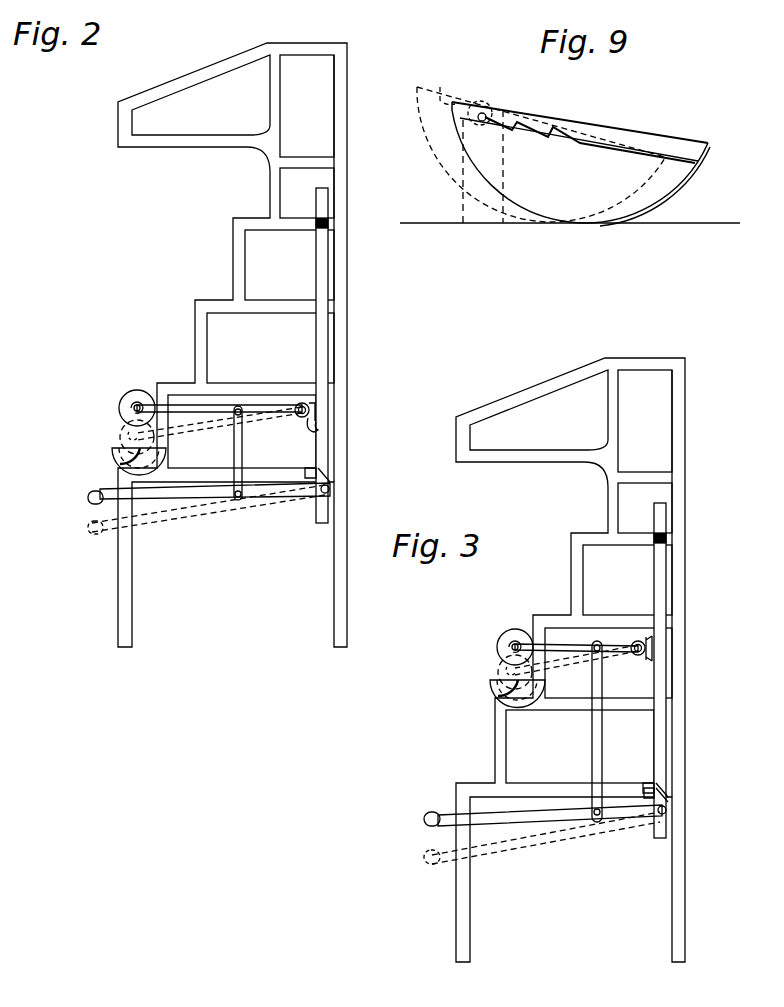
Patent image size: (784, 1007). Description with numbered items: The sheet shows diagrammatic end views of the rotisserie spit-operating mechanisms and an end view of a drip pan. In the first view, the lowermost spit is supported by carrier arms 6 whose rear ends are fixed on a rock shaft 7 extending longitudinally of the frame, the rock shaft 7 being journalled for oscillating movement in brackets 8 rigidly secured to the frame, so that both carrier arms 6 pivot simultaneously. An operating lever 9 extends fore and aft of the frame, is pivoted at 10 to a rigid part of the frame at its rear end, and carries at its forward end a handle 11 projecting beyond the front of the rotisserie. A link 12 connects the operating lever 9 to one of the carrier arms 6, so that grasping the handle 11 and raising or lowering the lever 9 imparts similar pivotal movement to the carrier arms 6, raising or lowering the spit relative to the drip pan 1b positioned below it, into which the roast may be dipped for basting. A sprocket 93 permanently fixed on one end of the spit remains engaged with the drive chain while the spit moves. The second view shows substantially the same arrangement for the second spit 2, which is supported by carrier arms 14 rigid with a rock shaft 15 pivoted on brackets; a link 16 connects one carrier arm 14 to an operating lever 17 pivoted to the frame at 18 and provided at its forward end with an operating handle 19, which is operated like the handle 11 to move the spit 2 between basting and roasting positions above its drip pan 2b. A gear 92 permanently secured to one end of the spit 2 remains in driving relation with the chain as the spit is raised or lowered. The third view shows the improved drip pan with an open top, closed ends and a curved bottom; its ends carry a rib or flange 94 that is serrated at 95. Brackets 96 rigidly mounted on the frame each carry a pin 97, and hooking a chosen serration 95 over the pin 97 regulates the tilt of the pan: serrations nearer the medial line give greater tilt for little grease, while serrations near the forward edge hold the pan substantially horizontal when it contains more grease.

In FIG. 2, the carrier arm 6 is at (180, 430).
In FIG. 2, the sprocket 93 is at (120, 430).
In FIG. 2, the drip pan 1b is at (112, 452).
In FIG. 2, the rock shaft 7 is at (309, 407).
In FIG. 2, the bracket 8 is at (316, 427).
In FIG. 2, the pivot 10 is at (330, 490).
In FIG. 2, the handle 11 is at (93, 501).
In FIG. 2, the operating lever 9 is at (197, 497).
In FIG. 2, the link 12 is at (240, 458).
In FIG. 3, the second spit 2 is at (500, 640).
In FIG. 3, the gear 92 is at (497, 650).
In FIG. 3, the drip pan 2b is at (492, 686).
In FIG. 3, the carrier arm 14 is at (553, 648).
In FIG. 3, the rock shaft 15 is at (653, 648).
In FIG. 3, the link 16 is at (598, 752).
In FIG. 3, the operating lever 17 is at (556, 814).
In FIG. 3, the pivot 18 is at (668, 810).
In FIG. 3, the operating handle 19 is at (426, 821).
In FIG. 9, the rib or flange 94 is at (695, 146).
In FIG. 9, the serrations 95 is at (586, 139).
In FIG. 9, the bracket 96 is at (463, 205).
In FIG. 9, the pin 97 is at (487, 116).